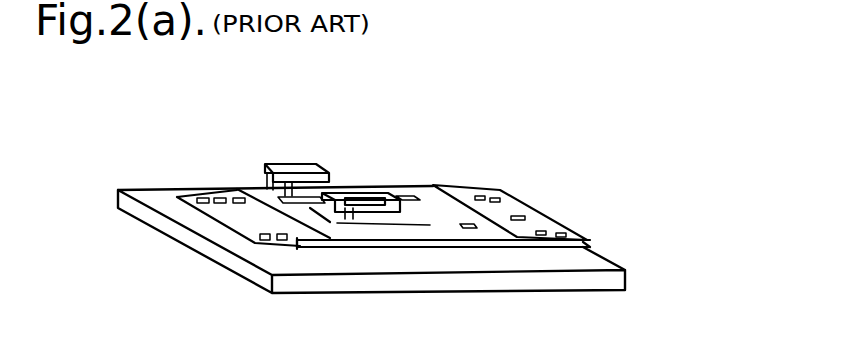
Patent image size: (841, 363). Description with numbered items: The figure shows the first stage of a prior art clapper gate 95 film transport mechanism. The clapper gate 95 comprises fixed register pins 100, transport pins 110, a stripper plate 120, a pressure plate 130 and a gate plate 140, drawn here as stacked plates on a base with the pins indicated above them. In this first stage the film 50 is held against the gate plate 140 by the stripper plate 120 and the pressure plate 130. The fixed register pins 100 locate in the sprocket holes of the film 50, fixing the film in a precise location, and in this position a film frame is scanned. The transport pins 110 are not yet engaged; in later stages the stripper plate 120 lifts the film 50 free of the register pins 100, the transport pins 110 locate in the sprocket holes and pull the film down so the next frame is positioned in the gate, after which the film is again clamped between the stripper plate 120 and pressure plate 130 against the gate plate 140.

The clapper gate 95 is at (152, 244).
The gate plate 140 is at (212, 258).
The stripper plate 120 is at (513, 250).
The film 50 is at (298, 248).
The pressure plate 130 is at (508, 223).
The transport pins 110 is at (351, 185).
The fixed register pins 100 is at (408, 183).